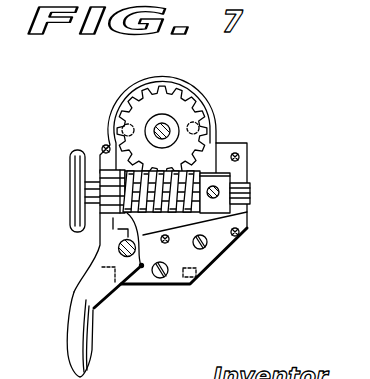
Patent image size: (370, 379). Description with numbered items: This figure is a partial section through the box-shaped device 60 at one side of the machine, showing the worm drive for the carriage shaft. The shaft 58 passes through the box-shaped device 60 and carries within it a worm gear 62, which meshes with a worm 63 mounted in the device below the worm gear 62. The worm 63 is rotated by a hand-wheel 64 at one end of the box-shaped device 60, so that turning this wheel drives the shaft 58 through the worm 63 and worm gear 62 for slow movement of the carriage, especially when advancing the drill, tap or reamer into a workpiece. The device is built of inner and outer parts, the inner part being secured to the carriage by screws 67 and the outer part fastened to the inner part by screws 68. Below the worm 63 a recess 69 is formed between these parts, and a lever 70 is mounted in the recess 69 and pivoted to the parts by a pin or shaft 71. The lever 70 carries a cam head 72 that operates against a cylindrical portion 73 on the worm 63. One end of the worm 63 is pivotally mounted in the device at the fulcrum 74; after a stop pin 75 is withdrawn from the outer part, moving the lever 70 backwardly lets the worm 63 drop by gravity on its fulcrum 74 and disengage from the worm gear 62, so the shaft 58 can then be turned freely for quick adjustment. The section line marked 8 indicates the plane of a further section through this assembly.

The section line 8- 8 is at (109, 82).
The shaft 58 is at (160, 124).
The box-shaped device 60 is at (180, 79).
The worm gear 62 is at (180, 104).
The worm 63 is at (190, 170).
The hand-wheel 64 is at (76, 157).
The screws 67 is at (207, 245).
The screws 68 is at (104, 146).
The recess 69 is at (143, 249).
The lever 70 is at (71, 337).
The pin or shaft 71 is at (127, 257).
The cam head 72 is at (100, 231).
The cylindrical portion 73 is at (107, 190).
The fulcrum 74 is at (249, 206).
The stop pin 75 is at (143, 268).